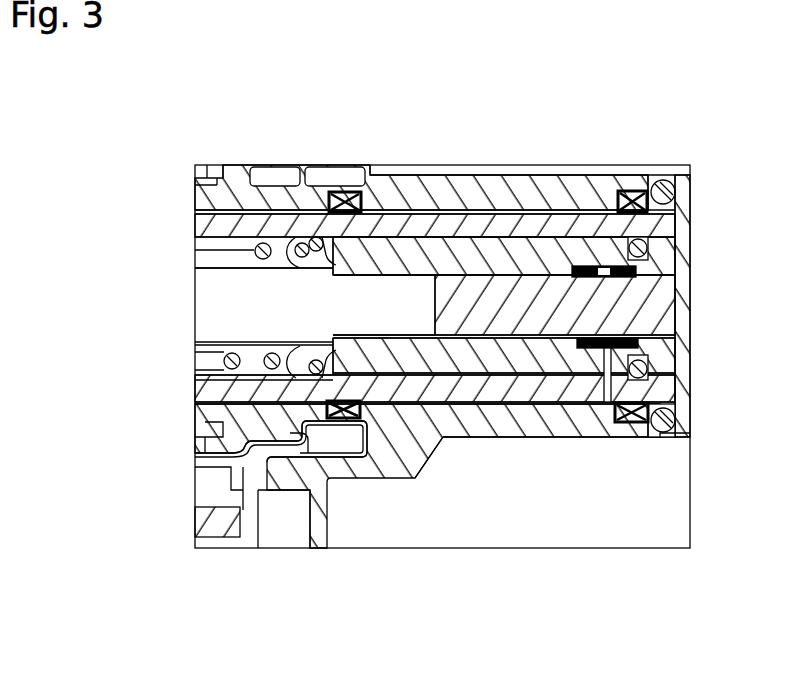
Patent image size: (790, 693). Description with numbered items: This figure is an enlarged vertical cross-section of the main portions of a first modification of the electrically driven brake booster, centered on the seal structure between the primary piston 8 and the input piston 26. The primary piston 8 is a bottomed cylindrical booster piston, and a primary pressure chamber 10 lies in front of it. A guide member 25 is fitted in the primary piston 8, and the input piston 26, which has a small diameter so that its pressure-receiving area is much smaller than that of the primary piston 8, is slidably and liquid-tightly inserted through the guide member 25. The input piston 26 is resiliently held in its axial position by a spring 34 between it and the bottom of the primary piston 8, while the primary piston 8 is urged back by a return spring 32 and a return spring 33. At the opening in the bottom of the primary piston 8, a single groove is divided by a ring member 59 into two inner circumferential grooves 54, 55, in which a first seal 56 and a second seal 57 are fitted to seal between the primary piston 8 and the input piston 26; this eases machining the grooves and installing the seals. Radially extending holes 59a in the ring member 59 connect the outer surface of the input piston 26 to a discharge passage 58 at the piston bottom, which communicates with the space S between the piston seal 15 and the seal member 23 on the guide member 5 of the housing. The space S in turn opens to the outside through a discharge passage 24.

The primary piston 8 is at (402, 175).
The guide member 25 is at (462, 250).
The inner circumferential groove 54 is at (565, 262).
The ring member 59 is at (597, 262).
The inner circumferential groove 55 is at (650, 262).
The radially extending holes 59a is at (670, 272).
The input piston 26 is at (680, 312).
The spring 34 is at (650, 365).
The return spring 33 is at (668, 425).
The primary pressure chamber 10 is at (207, 308).
The return spring 32 is at (224, 360).
The discharge passage 24 is at (253, 495).
The piston seal 15 is at (354, 420).
The space S is at (472, 404).
The guide member 5 is at (508, 430).
The first seal 56 is at (588, 350).
The discharge passage 58 is at (604, 404).
The second seal 57 is at (608, 404).
The seal member 23 is at (640, 438).